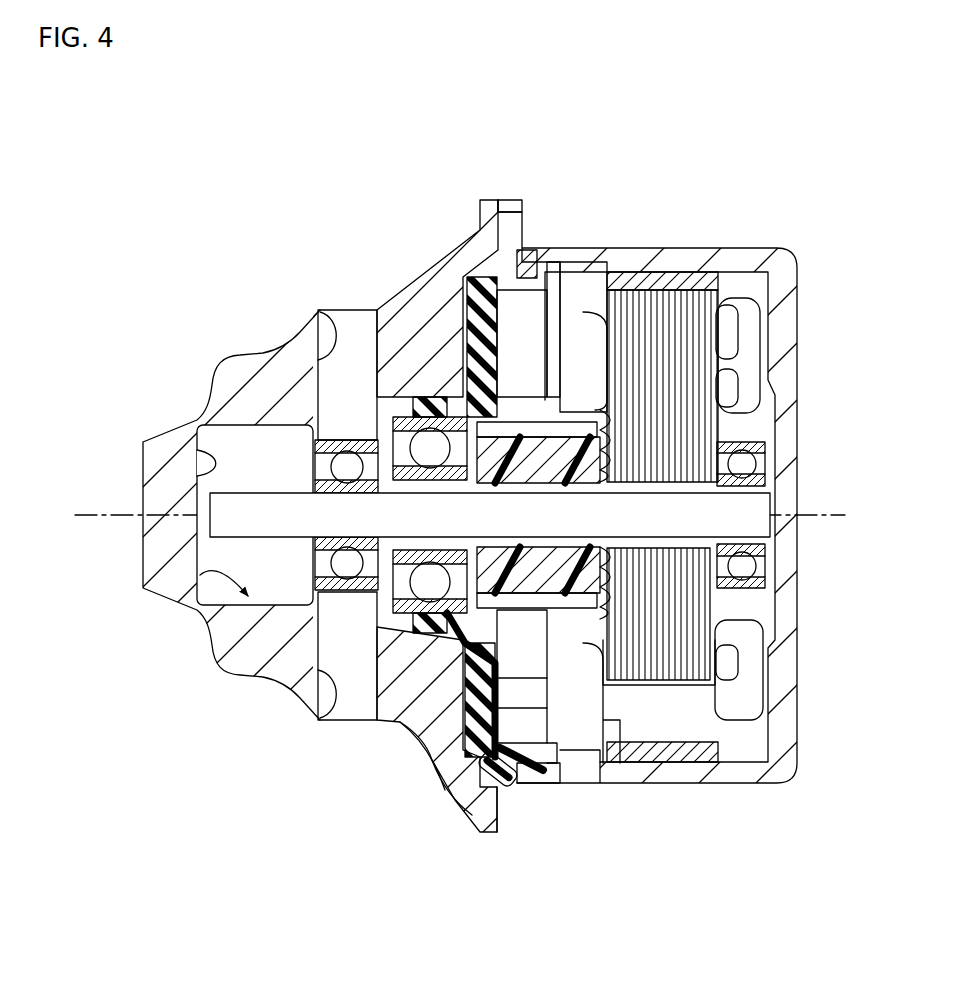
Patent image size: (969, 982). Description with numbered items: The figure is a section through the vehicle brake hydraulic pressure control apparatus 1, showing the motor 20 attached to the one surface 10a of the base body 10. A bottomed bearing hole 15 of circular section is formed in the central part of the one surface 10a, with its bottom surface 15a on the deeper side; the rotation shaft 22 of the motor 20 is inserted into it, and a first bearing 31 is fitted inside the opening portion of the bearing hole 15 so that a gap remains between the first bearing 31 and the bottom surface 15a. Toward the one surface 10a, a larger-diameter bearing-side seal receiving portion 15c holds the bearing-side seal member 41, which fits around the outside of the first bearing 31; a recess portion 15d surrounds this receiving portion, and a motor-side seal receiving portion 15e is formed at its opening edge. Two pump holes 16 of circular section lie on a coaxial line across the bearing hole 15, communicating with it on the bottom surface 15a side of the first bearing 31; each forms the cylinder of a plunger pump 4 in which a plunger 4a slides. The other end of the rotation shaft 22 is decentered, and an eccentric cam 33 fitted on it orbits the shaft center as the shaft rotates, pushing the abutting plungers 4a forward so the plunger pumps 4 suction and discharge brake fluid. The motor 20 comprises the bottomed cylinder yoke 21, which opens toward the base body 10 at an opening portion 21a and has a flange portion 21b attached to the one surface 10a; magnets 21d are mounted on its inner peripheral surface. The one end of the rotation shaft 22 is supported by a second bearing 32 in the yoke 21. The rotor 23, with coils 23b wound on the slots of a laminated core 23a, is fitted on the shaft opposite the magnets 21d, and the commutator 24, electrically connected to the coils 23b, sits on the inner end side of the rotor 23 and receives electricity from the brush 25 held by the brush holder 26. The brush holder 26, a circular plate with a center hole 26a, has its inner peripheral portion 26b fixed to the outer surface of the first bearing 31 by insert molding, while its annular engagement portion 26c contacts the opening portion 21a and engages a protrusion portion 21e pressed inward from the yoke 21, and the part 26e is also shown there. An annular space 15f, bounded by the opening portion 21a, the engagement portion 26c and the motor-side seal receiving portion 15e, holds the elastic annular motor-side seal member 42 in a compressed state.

The blower (overall) 1 is at (633, 188).
The plunger pump 4 is at (361, 305).
The plunger 4a is at (353, 323).
The base body 10 is at (504, 206).
The one surface 10a is at (498, 826).
The bearing hole 15 is at (195, 612).
The bottom surface 15a is at (200, 452).
The bearing-side seal receiving portion 15c is at (378, 740).
The recess portion 15d is at (457, 790).
The motor-side seal receiving portion 15e is at (482, 204).
The annular space 15f is at (527, 785).
The pump hole 16 is at (330, 322).
The motor 20 is at (764, 242).
The cylinder yoke 21 is at (728, 262).
The opening portion 21a is at (537, 277).
The flange portion 21b is at (514, 221).
The magnets 21d is at (676, 278).
The protrusion portion 21e is at (573, 767).
The rotation shaft 22 is at (760, 503).
The rotor 23 is at (742, 303).
The laminated core 23a is at (698, 327).
The coils 23b is at (726, 384).
The commutator 24 is at (560, 556).
The brush 25 is at (525, 633).
The brush holder 26 is at (556, 692).
The center hole 26a is at (730, 653).
The inner peripheral portion 26b is at (397, 727).
The engagement portion 26c is at (548, 785).
The holder portion 26e is at (433, 767).
The first bearing 31 is at (400, 413).
The second bearing 32 is at (767, 468).
The eccentric cam 33 is at (317, 448).
The bearing-side seal member 41 is at (437, 400).
The motor-side seal member 42 is at (485, 832).